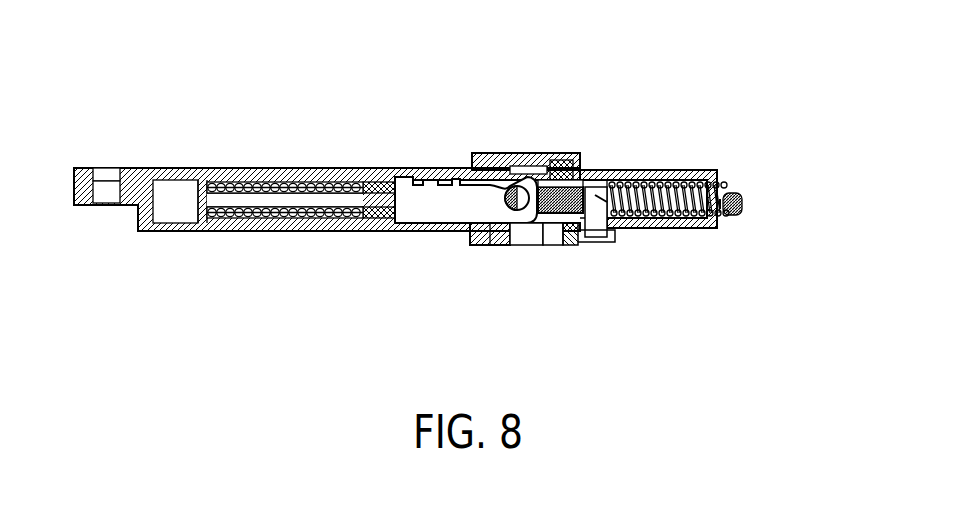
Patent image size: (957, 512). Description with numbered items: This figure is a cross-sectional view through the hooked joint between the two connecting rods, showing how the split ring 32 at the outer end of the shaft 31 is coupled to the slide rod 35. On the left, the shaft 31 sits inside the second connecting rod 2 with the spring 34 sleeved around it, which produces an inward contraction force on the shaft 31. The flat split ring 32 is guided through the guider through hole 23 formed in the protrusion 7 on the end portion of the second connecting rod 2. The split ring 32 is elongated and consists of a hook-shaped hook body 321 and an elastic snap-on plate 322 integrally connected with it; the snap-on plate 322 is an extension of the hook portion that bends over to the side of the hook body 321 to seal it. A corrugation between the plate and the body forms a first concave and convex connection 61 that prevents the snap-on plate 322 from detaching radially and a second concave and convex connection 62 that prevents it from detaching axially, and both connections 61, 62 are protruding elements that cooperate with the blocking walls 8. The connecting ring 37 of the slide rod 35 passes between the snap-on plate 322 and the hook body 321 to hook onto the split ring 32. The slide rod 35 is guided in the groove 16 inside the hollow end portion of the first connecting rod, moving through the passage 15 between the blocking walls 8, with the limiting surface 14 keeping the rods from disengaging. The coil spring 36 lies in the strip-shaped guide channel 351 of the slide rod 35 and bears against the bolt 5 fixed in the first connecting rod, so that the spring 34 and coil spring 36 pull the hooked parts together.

The second connecting rod 2 is at (258, 168).
The bolt 5 is at (630, 172).
The protrusion 7 is at (502, 245).
The blocking walls 8 is at (523, 237).
The limiting surface 14 is at (558, 245).
The passage 15 is at (540, 245).
The groove 16 is at (573, 183).
The guider through hole 23 is at (407, 228).
The shaft 31 is at (257, 212).
The split ring 32 is at (517, 173).
The spring 34 is at (300, 212).
The slide rod 35 is at (583, 187).
The coil spring 36 is at (687, 227).
The connecting ring 37 is at (508, 188).
The first concave and convex connection 61 is at (440, 177).
The second concave and convex connection 62 is at (432, 177).
The hook body 321 is at (452, 206).
The elastic snap-on plate 322 is at (470, 155).
The guide channel 351 is at (632, 227).